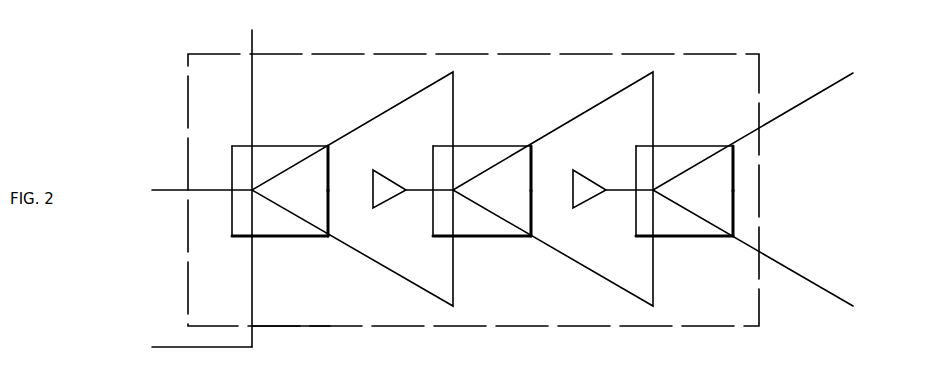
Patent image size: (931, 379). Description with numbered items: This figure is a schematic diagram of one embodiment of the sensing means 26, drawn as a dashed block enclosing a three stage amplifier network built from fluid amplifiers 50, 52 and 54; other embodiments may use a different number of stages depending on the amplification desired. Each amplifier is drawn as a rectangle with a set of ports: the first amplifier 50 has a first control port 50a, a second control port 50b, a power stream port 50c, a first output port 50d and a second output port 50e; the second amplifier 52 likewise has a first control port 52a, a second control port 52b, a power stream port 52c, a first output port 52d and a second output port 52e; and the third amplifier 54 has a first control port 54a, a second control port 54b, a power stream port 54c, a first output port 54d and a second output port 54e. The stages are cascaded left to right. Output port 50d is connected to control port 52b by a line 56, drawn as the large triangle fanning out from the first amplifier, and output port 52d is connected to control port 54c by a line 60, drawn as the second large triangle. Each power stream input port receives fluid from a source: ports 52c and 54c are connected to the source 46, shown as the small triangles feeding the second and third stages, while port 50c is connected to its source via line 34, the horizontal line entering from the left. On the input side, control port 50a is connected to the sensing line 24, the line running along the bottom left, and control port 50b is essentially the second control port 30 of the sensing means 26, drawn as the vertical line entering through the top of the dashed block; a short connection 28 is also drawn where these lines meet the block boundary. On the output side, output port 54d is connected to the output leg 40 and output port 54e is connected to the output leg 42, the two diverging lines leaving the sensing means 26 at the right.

The sensing line 24 is at (190, 350).
The sensing means 26 is at (608, 327).
The connection line 28 is at (253, 327).
The second control port 30 is at (252, 56).
The line 34 is at (181, 191).
The output leg 40 is at (803, 102).
The output leg 42 is at (818, 286).
The source 46 is at (376, 208).
The fluid amplifier 50 is at (266, 189).
The first control port 50a is at (254, 225).
The second control port 50b is at (256, 156).
The power stream port 50c is at (236, 185).
The first output port 50d is at (321, 153).
The second output port 50e is at (316, 226).
The fluid amplifier 52 is at (466, 189).
The first control port 52a is at (454, 225).
The second control port 52b is at (457, 156).
The power stream port 52c is at (438, 185).
The first output port 52d is at (522, 153).
The second output port 52e is at (516, 226).
The fluid amplifier 54 is at (669, 189).
The first control port 54a is at (653, 225).
The second control port 54b is at (657, 156).
The power stream port 54c is at (641, 185).
The first output port 54d is at (724, 153).
The second output port 54e is at (716, 226).
The line 56 is at (419, 93).
The line 60 is at (633, 93).